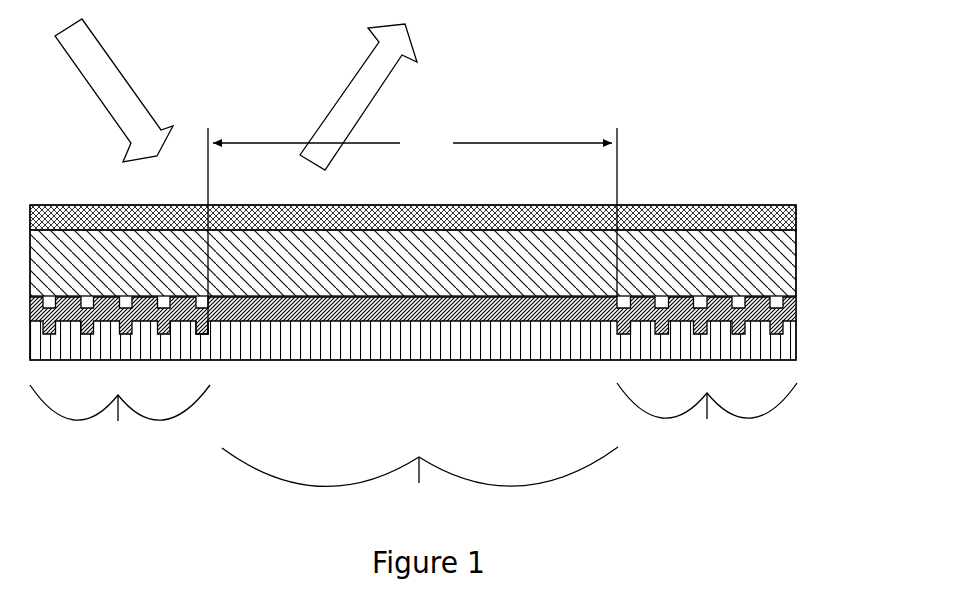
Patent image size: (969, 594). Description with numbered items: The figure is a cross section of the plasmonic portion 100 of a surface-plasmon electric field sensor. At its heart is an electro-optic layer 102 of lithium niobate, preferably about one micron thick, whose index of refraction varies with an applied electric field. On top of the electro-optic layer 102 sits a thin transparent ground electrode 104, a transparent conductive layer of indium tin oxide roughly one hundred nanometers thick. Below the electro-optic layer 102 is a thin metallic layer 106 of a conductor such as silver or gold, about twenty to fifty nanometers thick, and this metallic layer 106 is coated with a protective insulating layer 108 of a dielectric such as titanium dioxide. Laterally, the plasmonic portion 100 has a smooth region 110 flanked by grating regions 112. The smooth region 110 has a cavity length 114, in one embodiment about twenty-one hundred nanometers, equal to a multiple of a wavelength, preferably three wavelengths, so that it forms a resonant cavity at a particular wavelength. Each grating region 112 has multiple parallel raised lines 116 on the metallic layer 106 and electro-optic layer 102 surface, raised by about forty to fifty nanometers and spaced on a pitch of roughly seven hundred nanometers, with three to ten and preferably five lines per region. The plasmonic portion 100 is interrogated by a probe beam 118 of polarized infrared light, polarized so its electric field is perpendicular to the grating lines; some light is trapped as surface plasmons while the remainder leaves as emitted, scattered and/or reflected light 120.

The plasmonic portion 100 is at (686, 67).
The electro-optic layer 102 is at (796, 252).
The transparent ground electrode 104 is at (433, 205).
The metallic layer 106 is at (796, 310).
The protective insulating layer 108 is at (375, 361).
The smooth region 110 is at (420, 490).
The grating region 112 is at (413, 427).
The cavity length 114 is at (412, 231).
The raised lines 116 is at (208, 335).
The probe beam 118 is at (143, 141).
The emitted, scattered and/or reflected light 120 is at (380, 61).